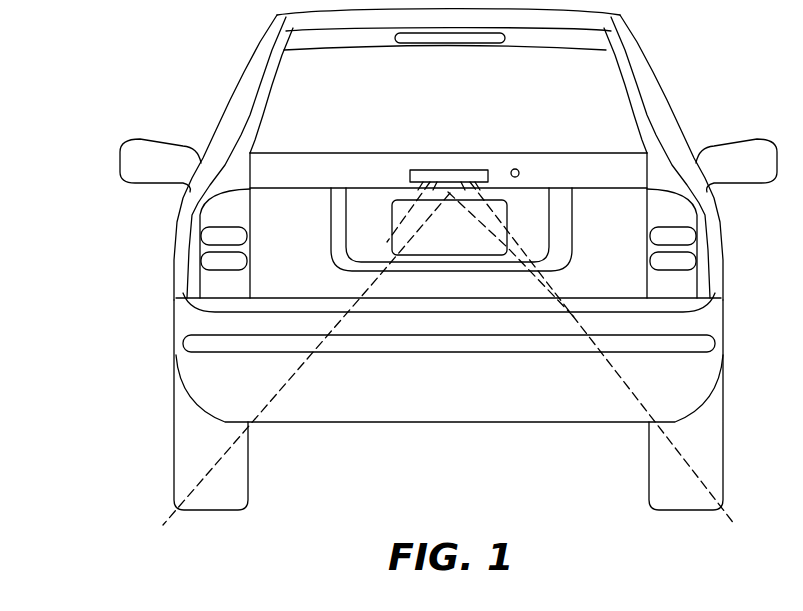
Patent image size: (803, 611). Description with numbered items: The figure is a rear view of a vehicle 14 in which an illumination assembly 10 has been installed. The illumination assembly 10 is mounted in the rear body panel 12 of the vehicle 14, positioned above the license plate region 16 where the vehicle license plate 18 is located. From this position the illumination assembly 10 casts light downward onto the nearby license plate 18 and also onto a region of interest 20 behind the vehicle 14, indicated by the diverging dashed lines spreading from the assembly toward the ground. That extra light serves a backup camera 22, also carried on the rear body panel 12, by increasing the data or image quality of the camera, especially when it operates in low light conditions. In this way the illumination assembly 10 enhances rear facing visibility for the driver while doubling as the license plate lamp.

The illumination assembly 10 is at (443, 158).
The rear body panel 12 is at (620, 173).
The vehicle 14 is at (668, 66).
The license plate region 16 is at (532, 222).
The vehicle license plate 18 is at (392, 223).
The region of interest 20 is at (208, 531).
The backup camera 22 is at (518, 168).